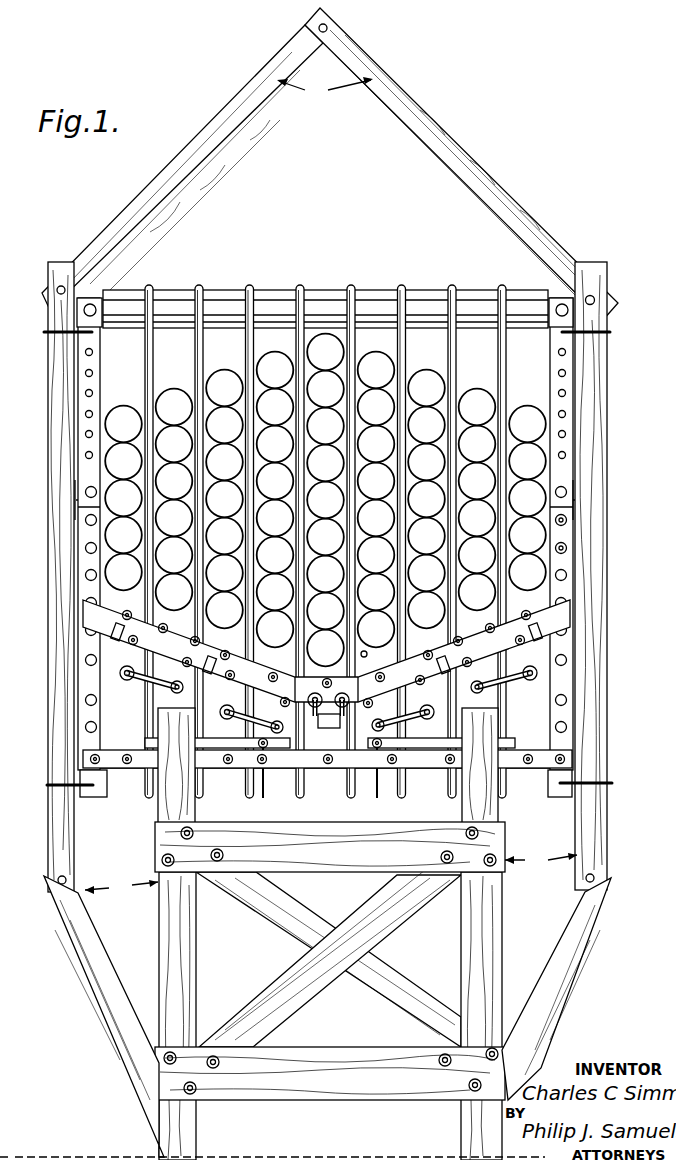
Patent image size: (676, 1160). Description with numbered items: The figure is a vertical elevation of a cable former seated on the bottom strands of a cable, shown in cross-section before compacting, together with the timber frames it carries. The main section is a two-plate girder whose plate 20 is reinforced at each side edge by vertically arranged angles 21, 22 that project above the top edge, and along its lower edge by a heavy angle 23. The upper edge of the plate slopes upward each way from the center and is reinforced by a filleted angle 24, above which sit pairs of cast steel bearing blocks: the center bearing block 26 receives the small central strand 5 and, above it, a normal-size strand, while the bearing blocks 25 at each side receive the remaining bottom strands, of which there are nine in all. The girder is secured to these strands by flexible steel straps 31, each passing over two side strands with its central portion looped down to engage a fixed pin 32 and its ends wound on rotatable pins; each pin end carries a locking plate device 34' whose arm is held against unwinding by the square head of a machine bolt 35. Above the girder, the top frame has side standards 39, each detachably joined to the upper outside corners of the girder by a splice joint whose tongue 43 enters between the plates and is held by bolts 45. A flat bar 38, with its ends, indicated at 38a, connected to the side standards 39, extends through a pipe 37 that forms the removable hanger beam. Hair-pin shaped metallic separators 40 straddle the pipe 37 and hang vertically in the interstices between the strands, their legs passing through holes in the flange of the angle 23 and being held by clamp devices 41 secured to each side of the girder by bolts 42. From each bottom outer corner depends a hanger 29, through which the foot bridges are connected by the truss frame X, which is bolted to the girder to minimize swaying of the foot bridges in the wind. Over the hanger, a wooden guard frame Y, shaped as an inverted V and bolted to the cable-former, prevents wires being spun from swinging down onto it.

The small central strand 5 is at (325, 648).
The plate 20 is at (547, 680).
The vertically arranged angle 21 is at (577, 716).
The vertically arranged angle 22 is at (78, 722).
The heavy angle 23 is at (137, 764).
The filleted angle 24 is at (127, 648).
The bearing block 25 is at (40, 668).
The center bearing block 26 is at (361, 661).
The depending hanger 29 is at (97, 797).
The flexible steel strap 31 is at (325, 611).
The fixed pin 32 is at (326, 611).
The locking plate device 34' is at (322, 734).
The machine bolt 35 is at (128, 676).
The pipe 37 is at (222, 310).
The flat bar 38 is at (105, 309).
The bolt 38a is at (90, 303).
The side standard 39 is at (97, 343).
The metallic separator 40 is at (196, 350).
The clamp device 41 is at (145, 742).
The bolt 42 is at (262, 750).
The tongue 43 is at (75, 497).
The bolt 45 is at (570, 549).
The frame X is at (331, 875).
The guard frame Y is at (325, 91).